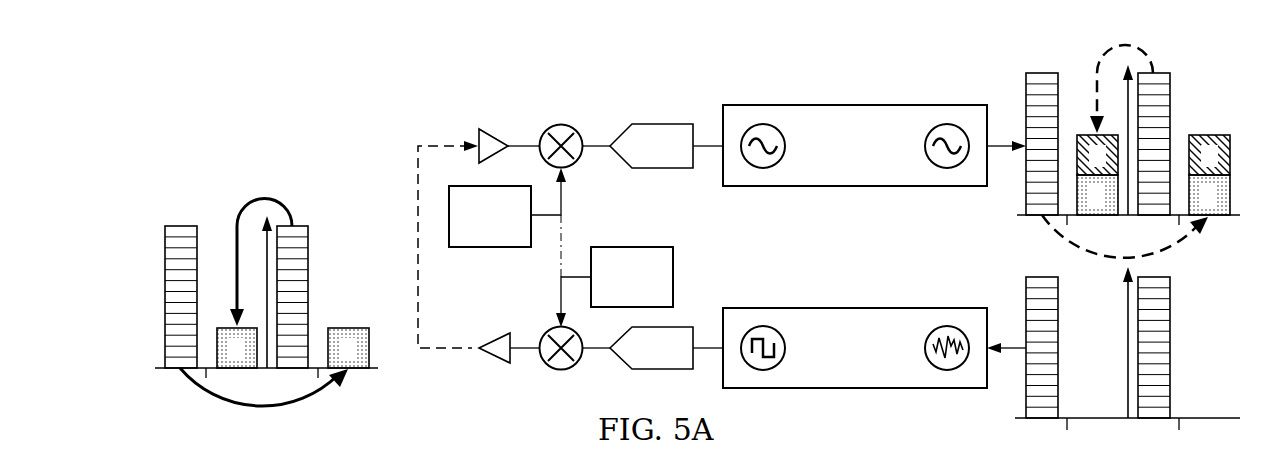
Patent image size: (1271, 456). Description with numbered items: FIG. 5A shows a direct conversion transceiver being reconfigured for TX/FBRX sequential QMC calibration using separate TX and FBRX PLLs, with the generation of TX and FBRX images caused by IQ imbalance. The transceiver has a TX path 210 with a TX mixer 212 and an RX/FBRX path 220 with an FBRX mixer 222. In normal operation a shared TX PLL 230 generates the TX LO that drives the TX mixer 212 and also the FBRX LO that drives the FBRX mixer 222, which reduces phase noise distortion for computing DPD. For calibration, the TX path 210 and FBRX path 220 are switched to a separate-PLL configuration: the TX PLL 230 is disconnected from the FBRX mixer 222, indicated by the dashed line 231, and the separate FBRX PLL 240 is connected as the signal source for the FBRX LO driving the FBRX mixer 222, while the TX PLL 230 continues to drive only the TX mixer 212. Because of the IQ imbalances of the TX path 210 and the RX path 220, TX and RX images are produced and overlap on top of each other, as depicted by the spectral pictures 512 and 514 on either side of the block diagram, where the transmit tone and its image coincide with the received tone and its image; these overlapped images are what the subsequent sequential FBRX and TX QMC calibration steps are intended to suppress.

The TX image overlap 512 is at (214, 192).
The RX image overlap 514 is at (1205, 90).
The FBRX mixer 222 is at (553, 125).
The RX/FBRX path 220 is at (853, 105).
The disconnected TX PLL connection 231 is at (562, 234).
The FBRX PLL 240 is at (490, 248).
The TX PLL 230 is at (673, 264).
The TX mixer 212 is at (552, 368).
The TX path 210 is at (853, 388).